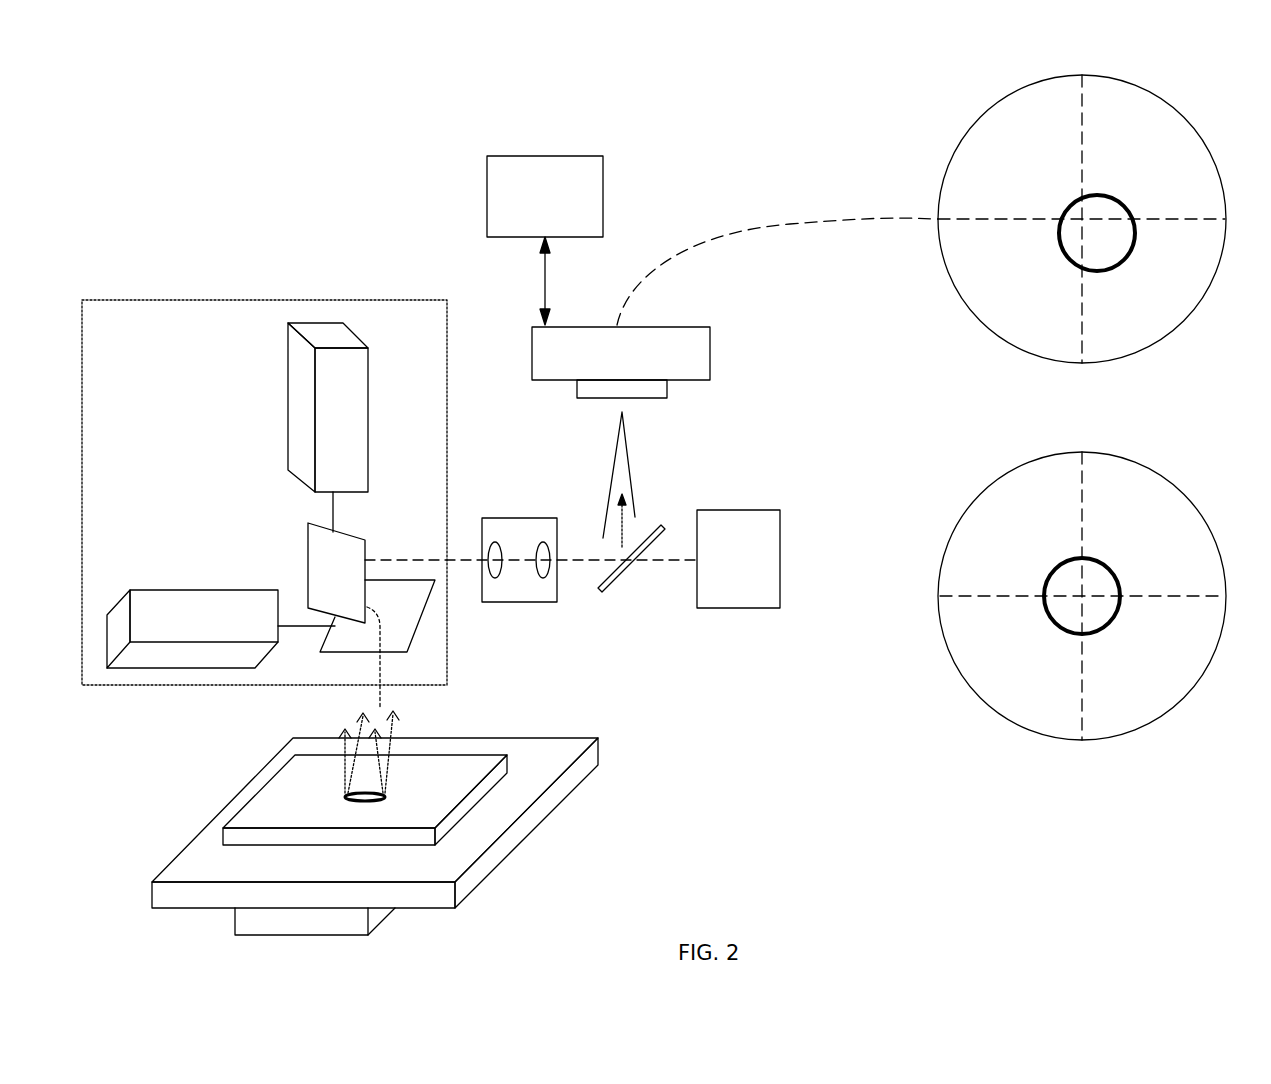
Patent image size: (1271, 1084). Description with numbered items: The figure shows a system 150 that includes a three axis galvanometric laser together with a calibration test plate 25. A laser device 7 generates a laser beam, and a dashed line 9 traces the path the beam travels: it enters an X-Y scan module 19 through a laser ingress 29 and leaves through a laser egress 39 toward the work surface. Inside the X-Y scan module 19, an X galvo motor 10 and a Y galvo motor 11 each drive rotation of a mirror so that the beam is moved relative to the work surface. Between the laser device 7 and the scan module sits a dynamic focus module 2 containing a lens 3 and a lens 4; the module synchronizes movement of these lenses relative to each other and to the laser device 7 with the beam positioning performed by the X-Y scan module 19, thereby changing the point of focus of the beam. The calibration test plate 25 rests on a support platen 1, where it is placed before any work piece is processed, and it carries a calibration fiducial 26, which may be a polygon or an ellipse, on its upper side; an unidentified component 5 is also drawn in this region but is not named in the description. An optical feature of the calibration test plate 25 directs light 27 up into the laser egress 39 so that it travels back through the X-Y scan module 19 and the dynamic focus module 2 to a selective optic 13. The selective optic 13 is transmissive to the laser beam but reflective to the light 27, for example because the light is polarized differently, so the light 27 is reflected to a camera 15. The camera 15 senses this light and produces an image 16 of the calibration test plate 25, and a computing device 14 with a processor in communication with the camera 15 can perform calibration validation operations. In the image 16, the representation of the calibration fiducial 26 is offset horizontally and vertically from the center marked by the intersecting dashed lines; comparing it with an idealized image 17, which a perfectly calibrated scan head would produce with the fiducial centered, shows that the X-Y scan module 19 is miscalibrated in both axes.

The support platen 1 is at (542, 822).
The dynamic focus module 2 is at (520, 517).
The lens 3 is at (495, 578).
The lens 4 is at (543, 578).
The sample holder plate 5 is at (375, 769).
The laser device 7 is at (730, 570).
The dashed line 9 is at (427, 558).
The X galvo motor 10 is at (370, 420).
The Y galvo motor 11 is at (205, 588).
The selective optic 13 is at (613, 582).
The computing device 14 is at (558, 212).
The camera 15 is at (712, 362).
The image 16 is at (1140, 90).
The idealized image 17 is at (1132, 460).
The X-Y scan module 19 is at (140, 412).
The calibration test plate 25 is at (432, 770).
The calibration fiducial 26 is at (348, 798).
The light 27 is at (328, 776).
The laser ingress 29 is at (459, 535).
The laser egress 39 is at (362, 697).
The system 150 is at (1082, 472).